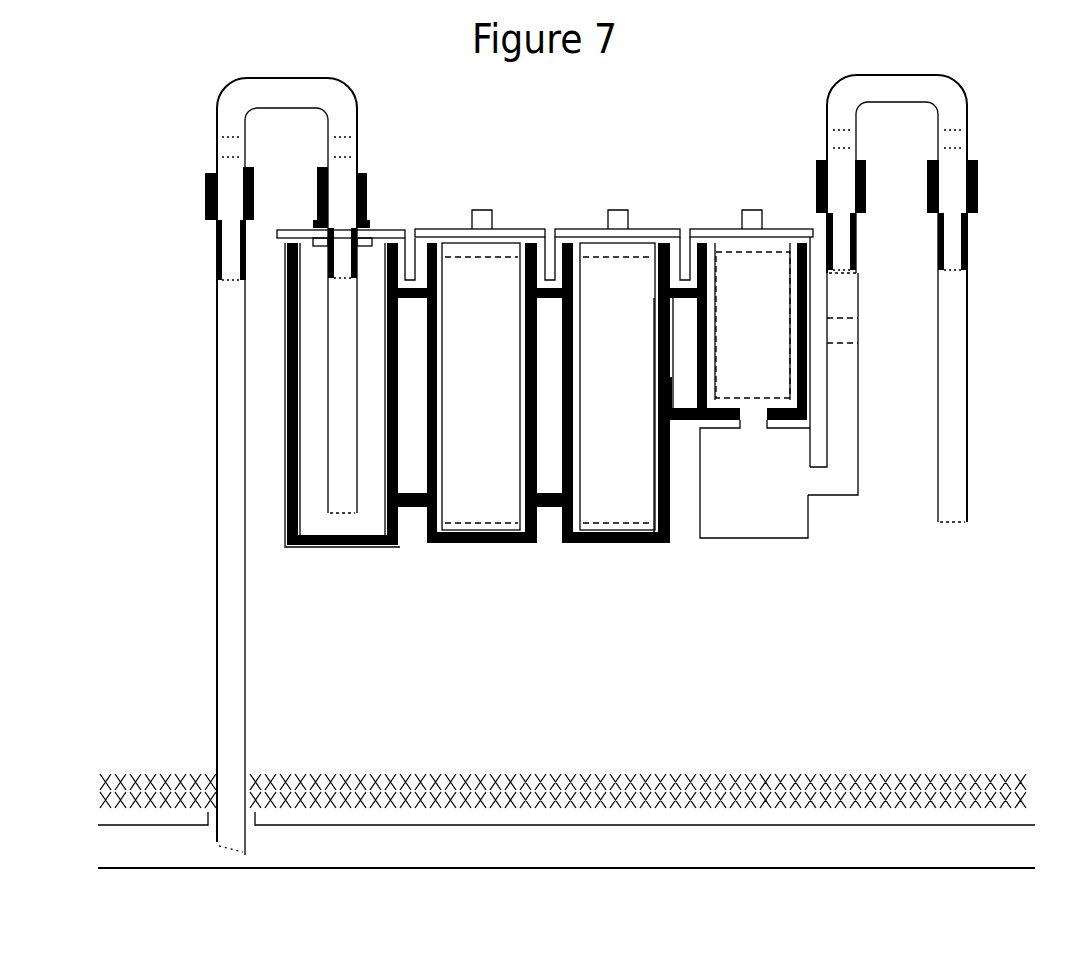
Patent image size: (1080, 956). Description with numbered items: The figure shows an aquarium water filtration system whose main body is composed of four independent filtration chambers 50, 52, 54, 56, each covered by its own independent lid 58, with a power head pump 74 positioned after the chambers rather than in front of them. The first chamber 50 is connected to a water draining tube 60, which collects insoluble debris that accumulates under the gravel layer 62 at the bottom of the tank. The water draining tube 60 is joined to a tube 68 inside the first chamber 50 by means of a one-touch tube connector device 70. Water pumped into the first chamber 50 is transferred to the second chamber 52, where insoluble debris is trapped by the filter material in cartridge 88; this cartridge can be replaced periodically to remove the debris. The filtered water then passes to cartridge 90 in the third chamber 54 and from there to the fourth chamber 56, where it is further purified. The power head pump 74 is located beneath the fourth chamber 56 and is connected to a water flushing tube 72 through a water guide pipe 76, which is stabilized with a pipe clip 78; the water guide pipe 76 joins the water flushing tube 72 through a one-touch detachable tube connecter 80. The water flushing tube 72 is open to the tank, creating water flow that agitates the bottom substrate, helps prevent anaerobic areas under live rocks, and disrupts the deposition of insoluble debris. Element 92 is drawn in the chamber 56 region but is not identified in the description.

The first chamber 50 is at (336, 545).
The second chamber 52 is at (481, 390).
The third chamber 54 is at (647, 419).
The fourth chamber 56 is at (729, 267).
The lid 58 is at (492, 223).
The water draining tube 60 is at (217, 610).
The gravel layer 62 is at (597, 770).
The tube 68 is at (358, 350).
The one-touch tube connector device 70 is at (364, 178).
The water flushing tube 72 is at (968, 355).
The power head pump 74 is at (811, 528).
The water guide pipe 76 is at (858, 461).
The pipe clip 78 is at (862, 330).
The one-touch detachable tube connecter 80 is at (976, 175).
The cartridge 88 is at (442, 376).
The cartridge 90 is at (672, 543).
The membrane 92 is at (760, 250).